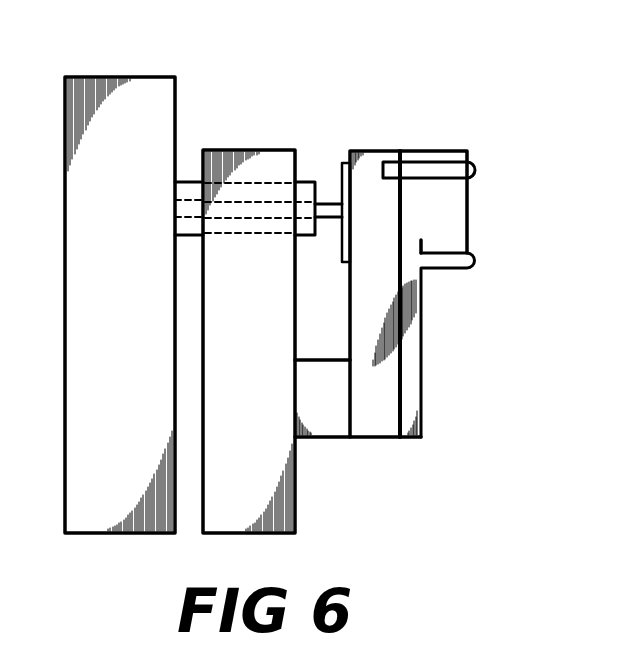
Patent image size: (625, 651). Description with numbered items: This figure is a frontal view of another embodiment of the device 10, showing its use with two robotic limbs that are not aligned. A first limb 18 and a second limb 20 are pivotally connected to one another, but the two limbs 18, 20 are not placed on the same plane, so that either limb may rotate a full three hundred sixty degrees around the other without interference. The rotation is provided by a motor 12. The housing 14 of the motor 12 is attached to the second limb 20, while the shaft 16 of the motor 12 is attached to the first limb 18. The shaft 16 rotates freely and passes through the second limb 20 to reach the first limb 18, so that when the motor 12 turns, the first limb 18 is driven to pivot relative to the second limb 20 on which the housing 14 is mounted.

The device 10 is at (438, 78).
The motor 12 is at (428, 377).
The housing 14 is at (423, 293).
The shaft 16 is at (333, 207).
The first limb 18 is at (177, 92).
The second limb 20 is at (296, 473).